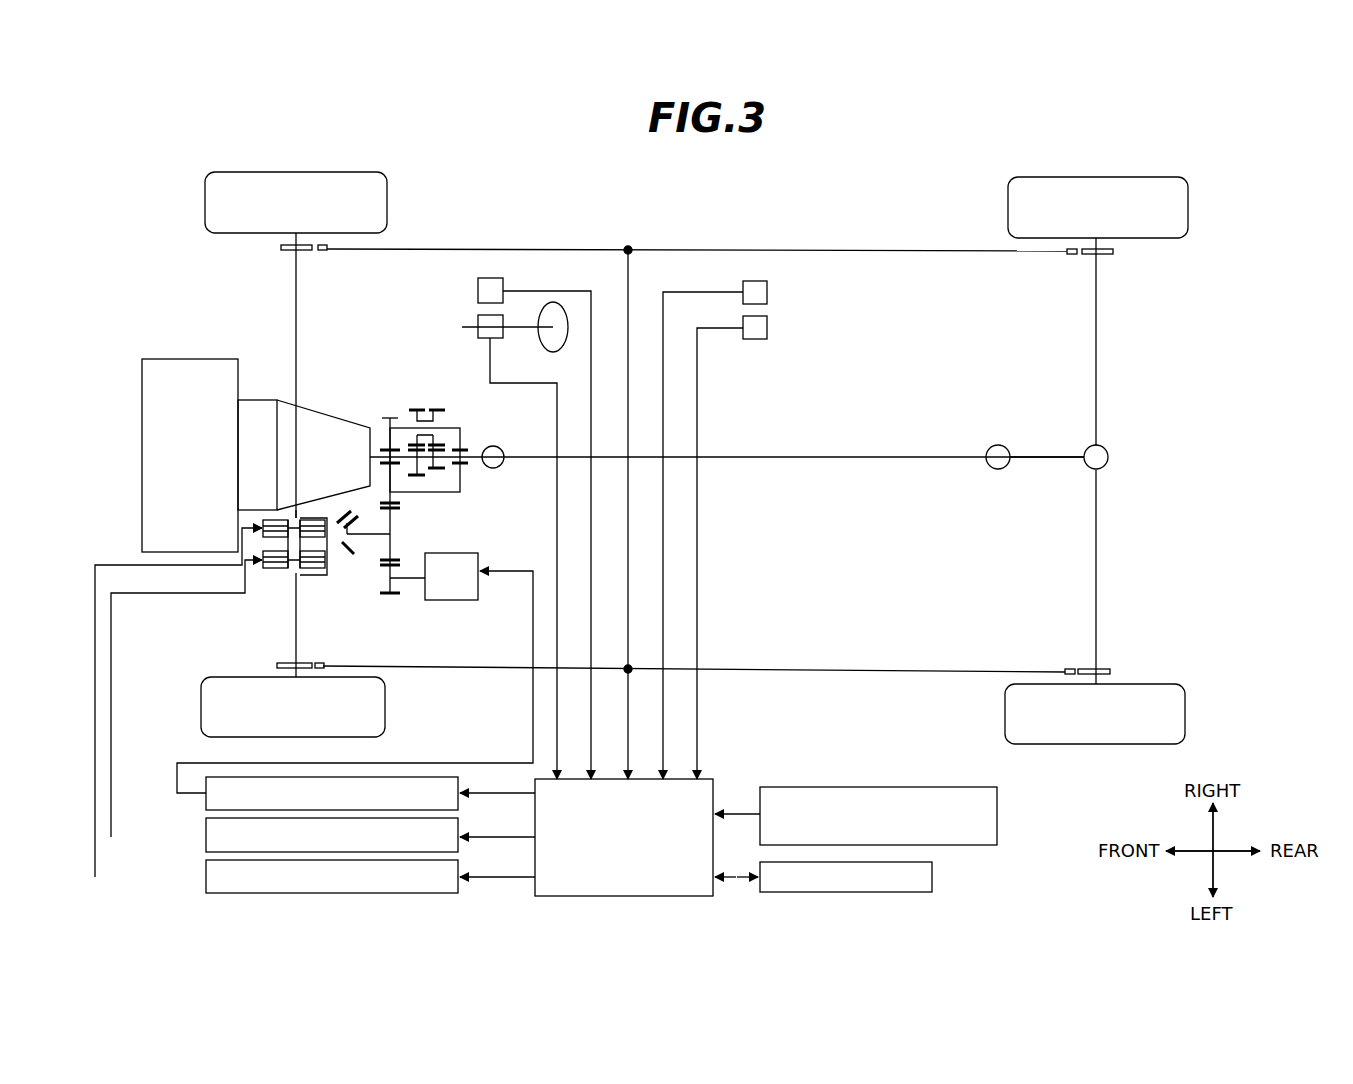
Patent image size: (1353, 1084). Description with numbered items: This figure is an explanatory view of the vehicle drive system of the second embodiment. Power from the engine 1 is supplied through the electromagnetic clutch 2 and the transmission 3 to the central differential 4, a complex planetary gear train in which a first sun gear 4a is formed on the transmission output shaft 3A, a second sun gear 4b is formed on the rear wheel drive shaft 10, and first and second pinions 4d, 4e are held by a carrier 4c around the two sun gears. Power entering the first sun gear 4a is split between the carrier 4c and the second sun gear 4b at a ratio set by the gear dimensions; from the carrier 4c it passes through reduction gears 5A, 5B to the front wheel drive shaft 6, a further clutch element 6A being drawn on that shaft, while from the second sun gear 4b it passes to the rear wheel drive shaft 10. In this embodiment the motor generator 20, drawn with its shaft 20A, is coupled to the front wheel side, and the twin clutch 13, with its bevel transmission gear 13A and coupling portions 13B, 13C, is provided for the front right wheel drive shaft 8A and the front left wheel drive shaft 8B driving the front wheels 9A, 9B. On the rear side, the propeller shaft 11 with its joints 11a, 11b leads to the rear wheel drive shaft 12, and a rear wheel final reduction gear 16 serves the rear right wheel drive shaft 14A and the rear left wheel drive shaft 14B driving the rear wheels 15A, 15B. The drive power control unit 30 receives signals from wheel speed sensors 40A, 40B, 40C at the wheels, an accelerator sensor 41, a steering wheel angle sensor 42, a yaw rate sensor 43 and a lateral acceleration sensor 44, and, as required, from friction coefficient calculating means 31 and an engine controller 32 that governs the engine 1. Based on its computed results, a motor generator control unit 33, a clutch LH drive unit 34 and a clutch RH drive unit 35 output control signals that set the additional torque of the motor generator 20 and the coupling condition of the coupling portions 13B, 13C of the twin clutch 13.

The engine 1 is at (193, 358).
The electromagnetic clutch 2 is at (258, 400).
The transmission 3 is at (322, 412).
The transmission output shaft 3A is at (384, 442).
The central differential 4 is at (425, 405).
The first sun gear 4a is at (417, 492).
The second sun gear 4b is at (433, 492).
The carrier 4c is at (456, 440).
The first pinion 4d is at (413, 408).
The second pinion 4e is at (440, 408).
The reduction gear 5A is at (388, 484).
The reduction gear 5B is at (388, 580).
The front wheel drive shaft 6 is at (374, 540).
The clutch 6A is at (346, 558).
The front right wheel drive shaft 8A is at (296, 325).
The front left wheel drive shaft 8B is at (296, 634).
The front wheel 9A is at (205, 201).
The front wheel 9B is at (203, 700).
The rear wheel drive shaft 10 is at (462, 455).
The propeller shaft 11 is at (772, 457).
The joint 11a is at (503, 452).
The joint 11b is at (990, 447).
The rear wheel drive shaft 12 is at (1030, 456).
The twin clutch 13 is at (272, 582).
The bevel transmission gear 13A is at (345, 520).
The coupling portion 13B is at (268, 522).
The coupling portion 13C is at (258, 570).
The rear right wheel drive shaft 14A is at (1096, 345).
The rear left wheel drive shaft 14B is at (1096, 600).
The rear wheel 15A is at (1188, 202).
The rear wheel 15B is at (1143, 684).
The rear wheel final reduction gear 16 is at (1108, 457).
The motor generator 20 is at (478, 596).
The motor/generator shaft 20A is at (392, 590).
The drive power control unit 30 is at (713, 780).
The friction coefficient calculating means 31 is at (997, 812).
The engine controller 32 is at (932, 876).
The motor generator control unit 33 is at (206, 797).
The clutch LH drive unit 34 is at (206, 843).
The clutch RH drive unit 35 is at (206, 884).
The wheel speed sensor 40A is at (325, 252).
The wheel speed sensor 40B is at (322, 666).
The wheel speed sensor 40C is at (1067, 251).
The accelerator sensor 41 is at (478, 292).
The steering wheel angle sensor 42 is at (478, 328).
The yaw rate sensor 43 is at (767, 292).
The lateral acceleration sensor 44 is at (767, 328).